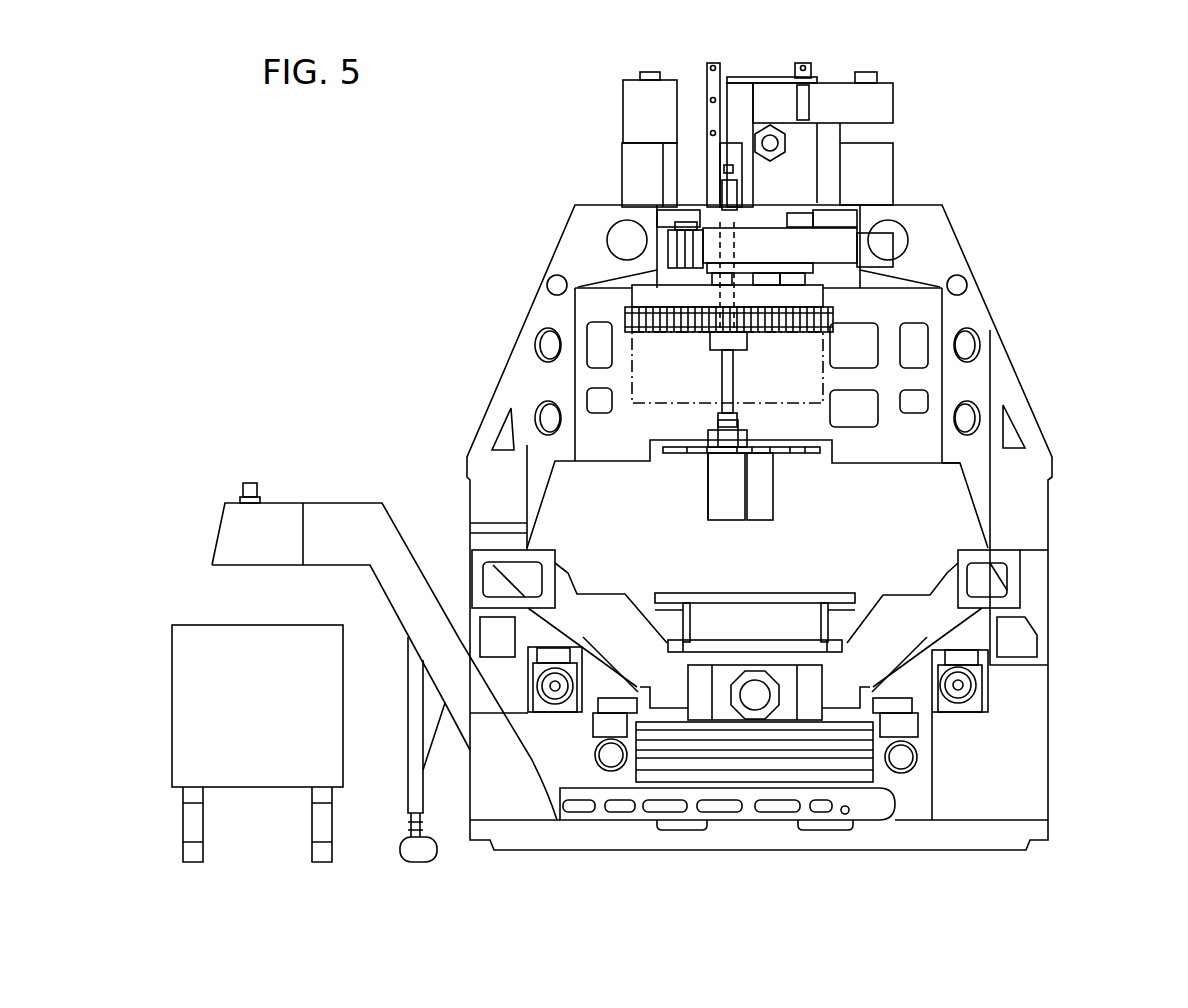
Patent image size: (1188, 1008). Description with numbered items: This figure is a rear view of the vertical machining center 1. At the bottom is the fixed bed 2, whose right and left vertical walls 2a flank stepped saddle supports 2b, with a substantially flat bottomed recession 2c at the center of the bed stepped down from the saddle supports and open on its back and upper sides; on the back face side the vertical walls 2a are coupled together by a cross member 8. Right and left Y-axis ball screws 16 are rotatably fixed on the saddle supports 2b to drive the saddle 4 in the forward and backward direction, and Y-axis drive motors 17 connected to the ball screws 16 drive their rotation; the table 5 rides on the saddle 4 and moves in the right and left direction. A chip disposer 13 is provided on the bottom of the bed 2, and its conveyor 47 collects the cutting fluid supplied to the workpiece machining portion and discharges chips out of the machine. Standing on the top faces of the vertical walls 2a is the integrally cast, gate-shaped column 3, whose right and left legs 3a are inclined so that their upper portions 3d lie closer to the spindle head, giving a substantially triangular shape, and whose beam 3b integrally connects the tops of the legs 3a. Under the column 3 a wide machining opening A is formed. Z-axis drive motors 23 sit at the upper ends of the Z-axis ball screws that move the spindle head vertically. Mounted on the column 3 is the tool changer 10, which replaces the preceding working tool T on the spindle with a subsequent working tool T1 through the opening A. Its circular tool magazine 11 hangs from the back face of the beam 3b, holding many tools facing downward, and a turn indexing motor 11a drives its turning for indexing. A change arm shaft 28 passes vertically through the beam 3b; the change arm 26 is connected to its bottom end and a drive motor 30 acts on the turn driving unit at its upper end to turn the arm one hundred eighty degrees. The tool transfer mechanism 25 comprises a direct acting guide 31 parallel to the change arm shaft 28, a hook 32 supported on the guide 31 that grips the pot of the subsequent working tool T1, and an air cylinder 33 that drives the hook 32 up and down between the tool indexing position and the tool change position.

The vertical machining center 1 is at (1078, 148).
The fixed bed 2 is at (1050, 715).
The vertical walls 2a is at (470, 565).
The saddle supports 2b is at (575, 715).
The bottomed recession 2c is at (797, 770).
The column 3 is at (1024, 393).
The legs 3a is at (467, 460).
The beam 3b is at (918, 205).
The upper portions of the legs 3d is at (547, 281).
The saddle 4 is at (548, 648).
The table 5 is at (818, 597).
The cross member 8 is at (912, 595).
The tool changer 10 is at (667, 460).
The tool magazine 11 is at (625, 317).
The turn indexing motor 11a is at (666, 240).
The chip disposer 13 is at (298, 483).
The Y-axis ball screws 16 is at (555, 691).
The Y-axis drive motors 17 is at (533, 700).
The Z-axis drive motors 23 is at (623, 102).
The tool transfer mechanism 25 is at (707, 103).
The change arm 26 is at (795, 455).
The change arm shaft 28 is at (737, 378).
The drive motor 30 is at (823, 83).
The direct acting guide 31 is at (758, 191).
The hook 32 is at (748, 437).
The air cylinder 33 is at (735, 242).
The conveyor 47 is at (720, 762).
The machining opening A is at (955, 505).
The tool T is at (773, 505).
The subsequent working tool T1 is at (708, 495).